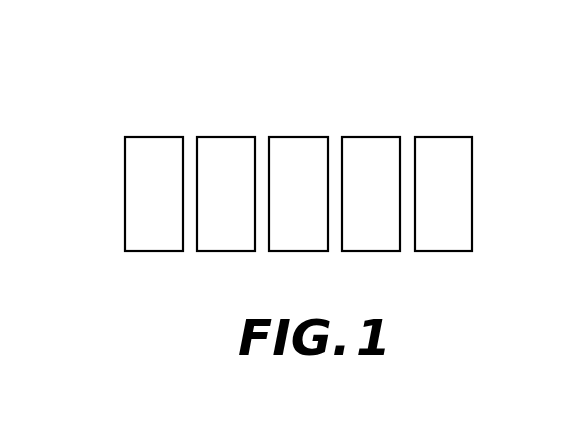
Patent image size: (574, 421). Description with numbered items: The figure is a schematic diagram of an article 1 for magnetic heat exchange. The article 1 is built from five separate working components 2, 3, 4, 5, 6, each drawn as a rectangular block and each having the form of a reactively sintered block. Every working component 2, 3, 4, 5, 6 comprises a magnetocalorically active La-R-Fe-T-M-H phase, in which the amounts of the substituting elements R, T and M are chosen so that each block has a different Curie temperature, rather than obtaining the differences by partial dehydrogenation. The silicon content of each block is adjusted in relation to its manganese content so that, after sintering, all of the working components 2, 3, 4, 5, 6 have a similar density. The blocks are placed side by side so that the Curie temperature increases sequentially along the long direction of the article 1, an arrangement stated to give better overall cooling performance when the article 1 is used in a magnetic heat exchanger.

The article for magnetic heat exchange 1 is at (96, 84).
The working component 2 is at (153, 148).
The working component 3 is at (225, 148).
The working component 4 is at (297, 148).
The working component 5 is at (370, 148).
The working component 6 is at (443, 148).